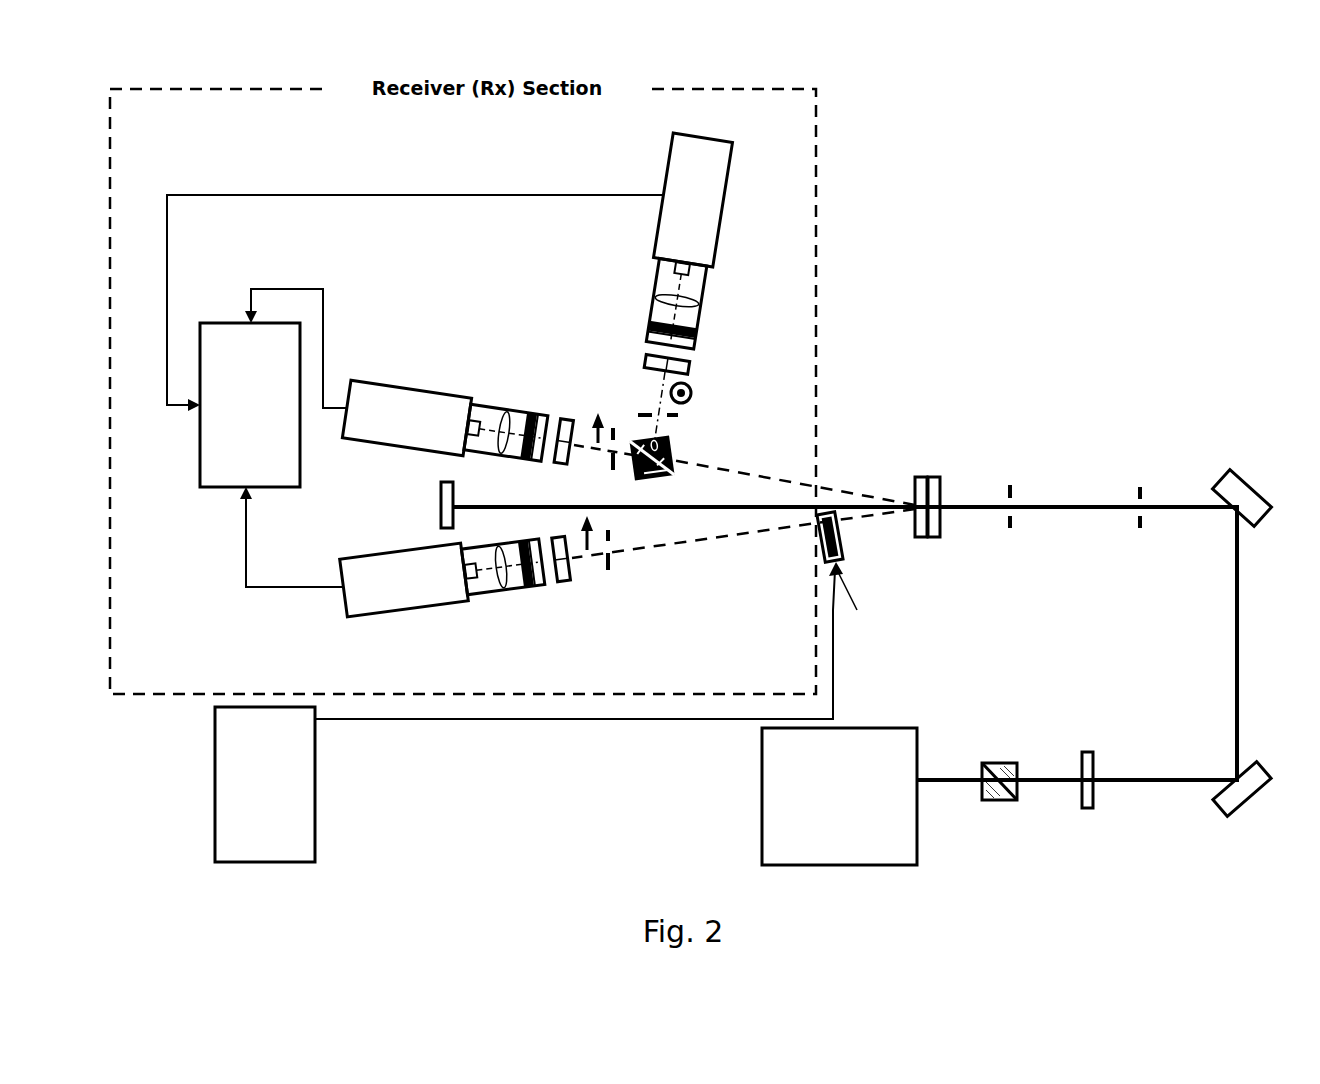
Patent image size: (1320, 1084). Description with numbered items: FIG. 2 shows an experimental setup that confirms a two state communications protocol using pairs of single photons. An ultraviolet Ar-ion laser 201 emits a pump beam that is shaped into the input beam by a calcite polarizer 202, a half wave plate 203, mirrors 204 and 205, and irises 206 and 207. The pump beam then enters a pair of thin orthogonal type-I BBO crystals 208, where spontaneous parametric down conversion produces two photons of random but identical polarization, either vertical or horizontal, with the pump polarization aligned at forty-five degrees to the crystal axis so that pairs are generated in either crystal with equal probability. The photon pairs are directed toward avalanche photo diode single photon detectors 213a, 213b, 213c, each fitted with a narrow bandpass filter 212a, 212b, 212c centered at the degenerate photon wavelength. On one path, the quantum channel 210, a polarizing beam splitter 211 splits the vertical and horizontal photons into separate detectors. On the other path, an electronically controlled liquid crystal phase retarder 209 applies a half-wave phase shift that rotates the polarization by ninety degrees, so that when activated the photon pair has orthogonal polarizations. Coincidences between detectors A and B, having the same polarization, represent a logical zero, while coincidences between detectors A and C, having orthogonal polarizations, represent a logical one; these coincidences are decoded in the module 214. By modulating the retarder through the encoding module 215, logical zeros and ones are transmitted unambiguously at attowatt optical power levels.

The Ar-ion laser 201 is at (839, 796).
The calcite polarizer 202 is at (1028, 825).
The half wave plate 203 is at (1109, 764).
The mirror 204 is at (1264, 799).
The mirror 205 is at (1263, 476).
The iris 206 is at (1140, 477).
The iris 207 is at (1011, 476).
The type-I BBO crystals 208 is at (951, 533).
The liquid crystal phase retarder 209 is at (1008, 606).
The quantum channel 210 is at (784, 470).
The polarizing beam splitter 211 is at (674, 429).
The narrow bandpass filter 212a is at (613, 580).
The narrow bandpass filter 212b is at (571, 388).
The narrow bandpass filter 212c is at (720, 362).
The avalanche photo diode single photon detector 213a is at (419, 611).
The avalanche photo diode single photon detector 213b is at (445, 373).
The avalanche photo diode single photon detector 213c is at (721, 241).
The decoding module 214 is at (250, 405).
The encoding module 215 is at (265, 784).